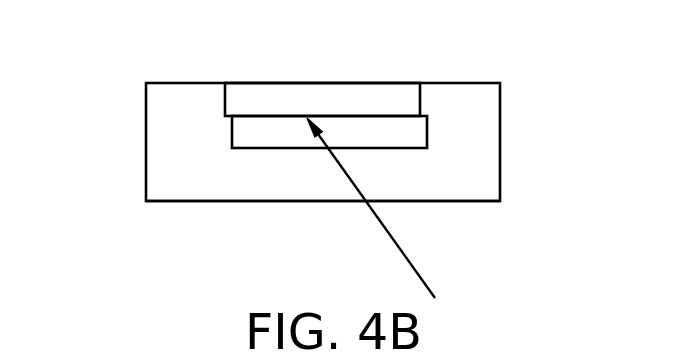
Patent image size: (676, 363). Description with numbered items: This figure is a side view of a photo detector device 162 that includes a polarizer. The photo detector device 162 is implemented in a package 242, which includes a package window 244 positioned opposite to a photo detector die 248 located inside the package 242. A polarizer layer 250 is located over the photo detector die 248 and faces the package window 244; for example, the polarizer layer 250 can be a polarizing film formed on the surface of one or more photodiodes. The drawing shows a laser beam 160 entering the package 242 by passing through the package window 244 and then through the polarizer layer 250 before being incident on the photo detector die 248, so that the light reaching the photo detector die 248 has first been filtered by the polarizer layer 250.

The photo detector device 162 is at (96, 128).
The package 242 is at (500, 162).
The package window 244 is at (323, 202).
The photo detector die 248 is at (383, 95).
The polarizer layer 250 is at (272, 133).
The laser beam 160 is at (414, 267).